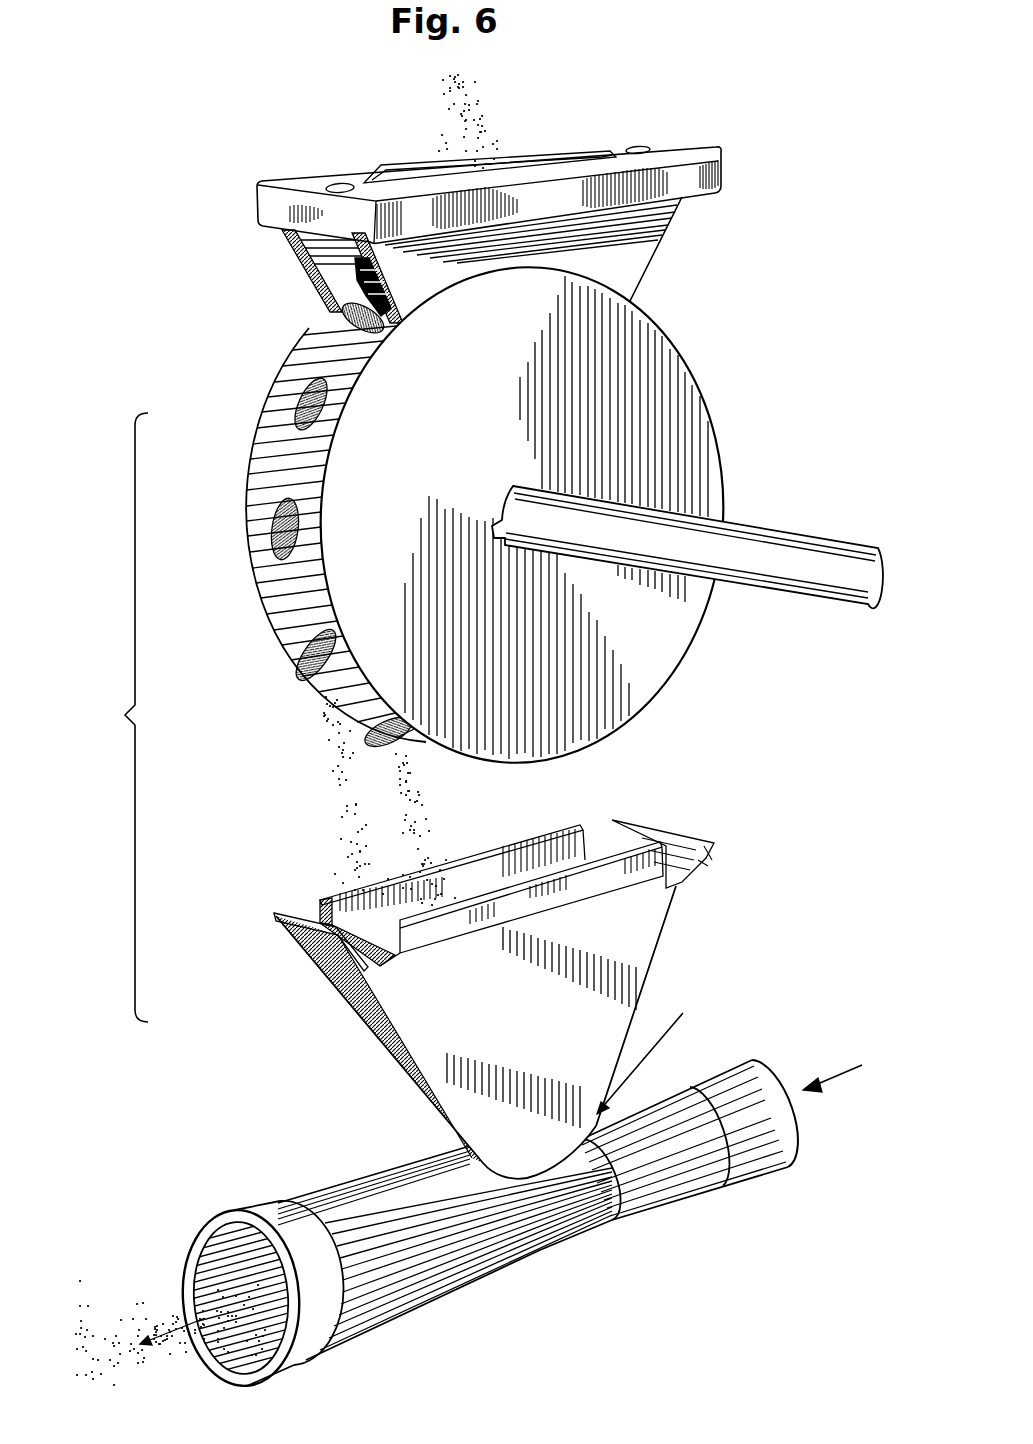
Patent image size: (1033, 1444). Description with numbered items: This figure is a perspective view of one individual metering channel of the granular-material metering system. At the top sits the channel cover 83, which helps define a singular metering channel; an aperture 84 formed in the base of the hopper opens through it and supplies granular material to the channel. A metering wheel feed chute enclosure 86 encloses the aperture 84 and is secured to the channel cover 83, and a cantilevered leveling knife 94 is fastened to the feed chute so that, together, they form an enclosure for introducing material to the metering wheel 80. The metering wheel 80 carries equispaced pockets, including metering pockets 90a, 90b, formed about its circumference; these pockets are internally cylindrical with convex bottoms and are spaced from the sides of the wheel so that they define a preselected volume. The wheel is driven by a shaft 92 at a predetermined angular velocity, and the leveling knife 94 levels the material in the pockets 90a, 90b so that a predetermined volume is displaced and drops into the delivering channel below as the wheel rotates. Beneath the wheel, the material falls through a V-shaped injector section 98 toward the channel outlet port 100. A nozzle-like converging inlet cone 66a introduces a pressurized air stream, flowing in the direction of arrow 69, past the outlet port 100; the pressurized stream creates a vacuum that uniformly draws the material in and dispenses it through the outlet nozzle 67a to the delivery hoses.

The channel cover 83 is at (690, 148).
The aperture 84 is at (552, 158).
The metering wheel feed chute enclosure 86 is at (632, 248).
The cantilevered leveling knife 94 is at (352, 298).
The metering wheel 80 is at (703, 385).
The metering pocket 90a is at (296, 392).
The metering pocket 90b is at (270, 530).
The shaft 92 is at (776, 533).
The funnel 98 is at (667, 928).
The channel outlet port 100 is at (666, 1050).
The material injector inlet nozzle 66a is at (777, 1074).
The arrow 69 is at (846, 1075).
The outlet nozzle 67a is at (194, 1262).